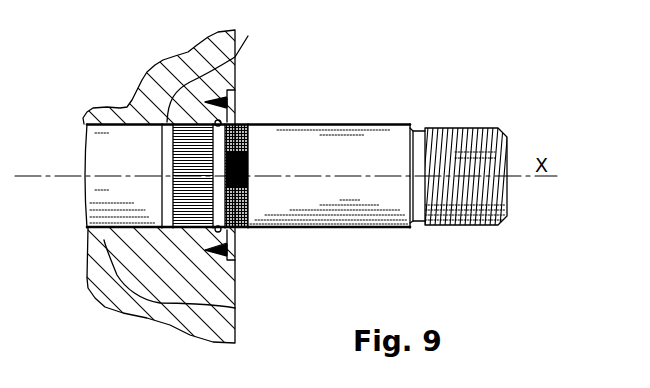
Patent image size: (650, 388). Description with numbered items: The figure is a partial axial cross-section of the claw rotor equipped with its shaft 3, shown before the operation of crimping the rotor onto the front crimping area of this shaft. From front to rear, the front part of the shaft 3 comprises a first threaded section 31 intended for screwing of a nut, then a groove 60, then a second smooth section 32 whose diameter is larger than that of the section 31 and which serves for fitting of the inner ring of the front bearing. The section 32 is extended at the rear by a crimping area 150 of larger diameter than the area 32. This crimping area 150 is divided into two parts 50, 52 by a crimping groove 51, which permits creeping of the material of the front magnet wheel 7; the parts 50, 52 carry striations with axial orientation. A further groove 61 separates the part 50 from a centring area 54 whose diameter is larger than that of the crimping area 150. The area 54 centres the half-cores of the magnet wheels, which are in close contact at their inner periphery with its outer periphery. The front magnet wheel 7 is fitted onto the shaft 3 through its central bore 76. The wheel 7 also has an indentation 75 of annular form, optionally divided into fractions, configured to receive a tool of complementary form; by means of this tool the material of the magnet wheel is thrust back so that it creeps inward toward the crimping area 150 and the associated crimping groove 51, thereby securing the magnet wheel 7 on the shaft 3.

The shaft 3 is at (466, 232).
The front magnet wheel 7 is at (226, 331).
The first threaded section 31 is at (468, 127).
The second smooth section 32 is at (360, 123).
The part of crimping area 50 is at (187, 233).
The crimping groove 51 is at (248, 157).
The part of crimping area 52 is at (242, 229).
The centring area 54 is at (102, 232).
The groove 60 is at (418, 225).
The groove 61 is at (213, 100).
The indentation 75 is at (236, 103).
The central bore 76 is at (136, 230).
The crimping area 150 is at (246, 121).